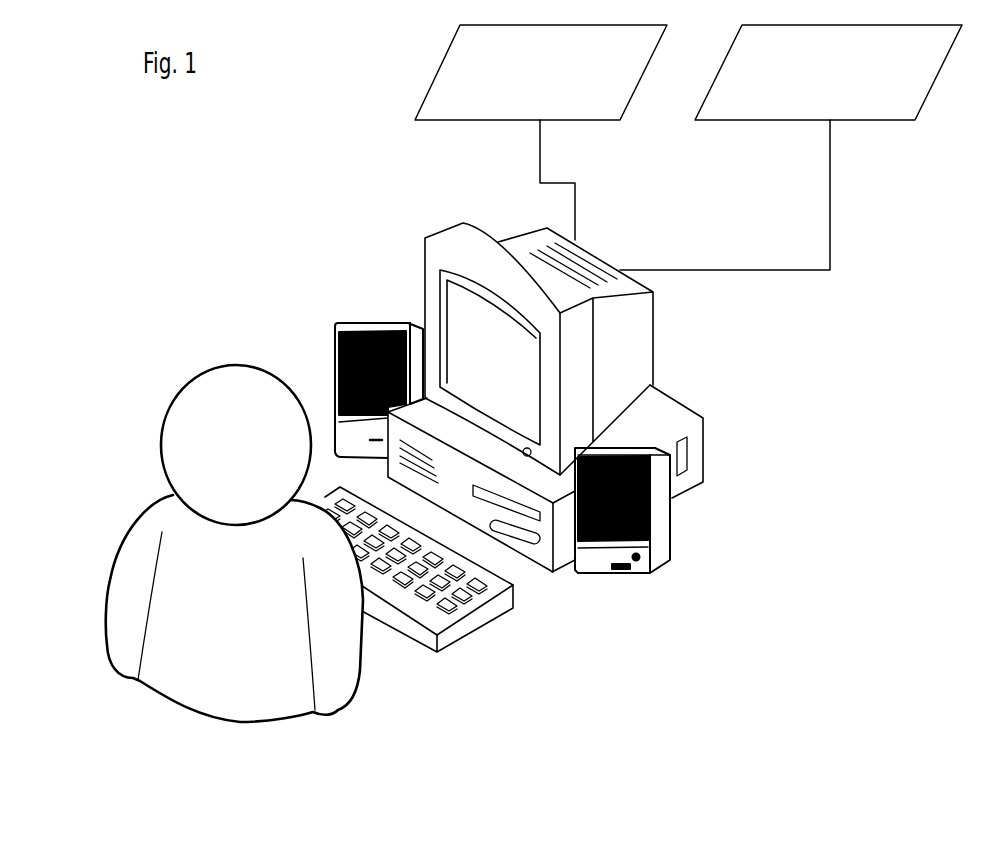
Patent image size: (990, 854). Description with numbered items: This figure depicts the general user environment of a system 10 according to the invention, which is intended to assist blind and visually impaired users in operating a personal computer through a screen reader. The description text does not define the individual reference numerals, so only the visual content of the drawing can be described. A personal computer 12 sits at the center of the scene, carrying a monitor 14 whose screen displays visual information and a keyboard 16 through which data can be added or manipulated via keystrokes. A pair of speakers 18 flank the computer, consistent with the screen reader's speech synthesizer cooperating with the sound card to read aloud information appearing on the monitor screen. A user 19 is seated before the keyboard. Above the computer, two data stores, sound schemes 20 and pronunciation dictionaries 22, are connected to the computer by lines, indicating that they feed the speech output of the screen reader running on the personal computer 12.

The system 10 is at (672, 695).
The computer 12 is at (683, 407).
The monitor 14 is at (480, 230).
The keyboard 16 is at (490, 623).
The speakers 18 is at (375, 320).
The user 19 is at (358, 695).
The sound schemes 20 is at (885, 120).
The pronunciation dictionaries 22 is at (605, 120).